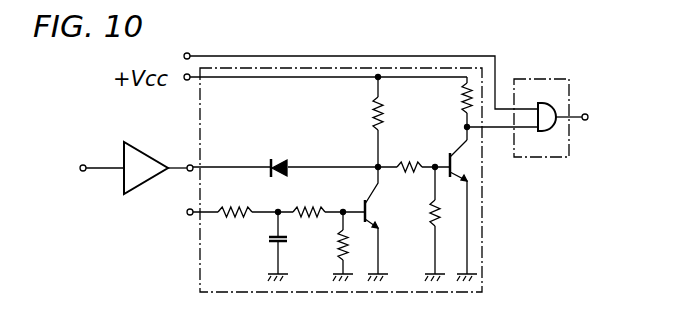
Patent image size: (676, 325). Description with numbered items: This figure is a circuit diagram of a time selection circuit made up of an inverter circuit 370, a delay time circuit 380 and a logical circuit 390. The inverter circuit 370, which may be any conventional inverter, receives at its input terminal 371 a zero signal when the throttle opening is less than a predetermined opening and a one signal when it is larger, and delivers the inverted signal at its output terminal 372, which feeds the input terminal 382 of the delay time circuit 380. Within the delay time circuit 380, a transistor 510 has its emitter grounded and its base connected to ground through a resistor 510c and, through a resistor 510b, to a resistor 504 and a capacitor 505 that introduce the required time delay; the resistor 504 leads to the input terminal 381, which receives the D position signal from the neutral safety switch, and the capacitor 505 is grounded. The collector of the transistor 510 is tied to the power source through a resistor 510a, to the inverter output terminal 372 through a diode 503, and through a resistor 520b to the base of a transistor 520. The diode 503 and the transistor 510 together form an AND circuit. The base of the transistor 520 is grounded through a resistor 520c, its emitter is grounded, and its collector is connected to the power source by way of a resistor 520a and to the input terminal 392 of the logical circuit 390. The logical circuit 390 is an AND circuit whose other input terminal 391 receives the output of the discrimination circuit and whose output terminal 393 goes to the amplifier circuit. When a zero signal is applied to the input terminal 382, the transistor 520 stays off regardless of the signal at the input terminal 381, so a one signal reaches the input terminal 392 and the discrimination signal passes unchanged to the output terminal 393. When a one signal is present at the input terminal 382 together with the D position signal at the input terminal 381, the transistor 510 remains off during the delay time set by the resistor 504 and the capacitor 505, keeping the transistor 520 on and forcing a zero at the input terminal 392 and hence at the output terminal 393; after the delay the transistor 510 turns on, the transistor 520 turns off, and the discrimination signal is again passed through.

The inverter circuit 370 is at (121, 180).
The input terminal 371 is at (90, 163).
The output terminal 372 is at (174, 162).
The delay time circuit 380 is at (484, 205).
The input terminal 381 is at (190, 218).
The input terminal 382 is at (190, 165).
The logical circuit 390 is at (562, 79).
The input terminal 391 is at (187, 53).
The input terminal 392 is at (503, 131).
The output terminal 393 is at (578, 106).
The diode 503 is at (275, 157).
The resistor 504 is at (236, 192).
The capacitor 505 is at (268, 237).
The transistor 510 is at (365, 195).
The resistor 510a is at (372, 112).
The resistor 510b is at (314, 192).
The resistor 510c is at (340, 242).
The transistor 520 is at (455, 148).
The resistor 520a is at (460, 97).
The resistor 520b is at (413, 160).
The resistor 520c is at (430, 222).